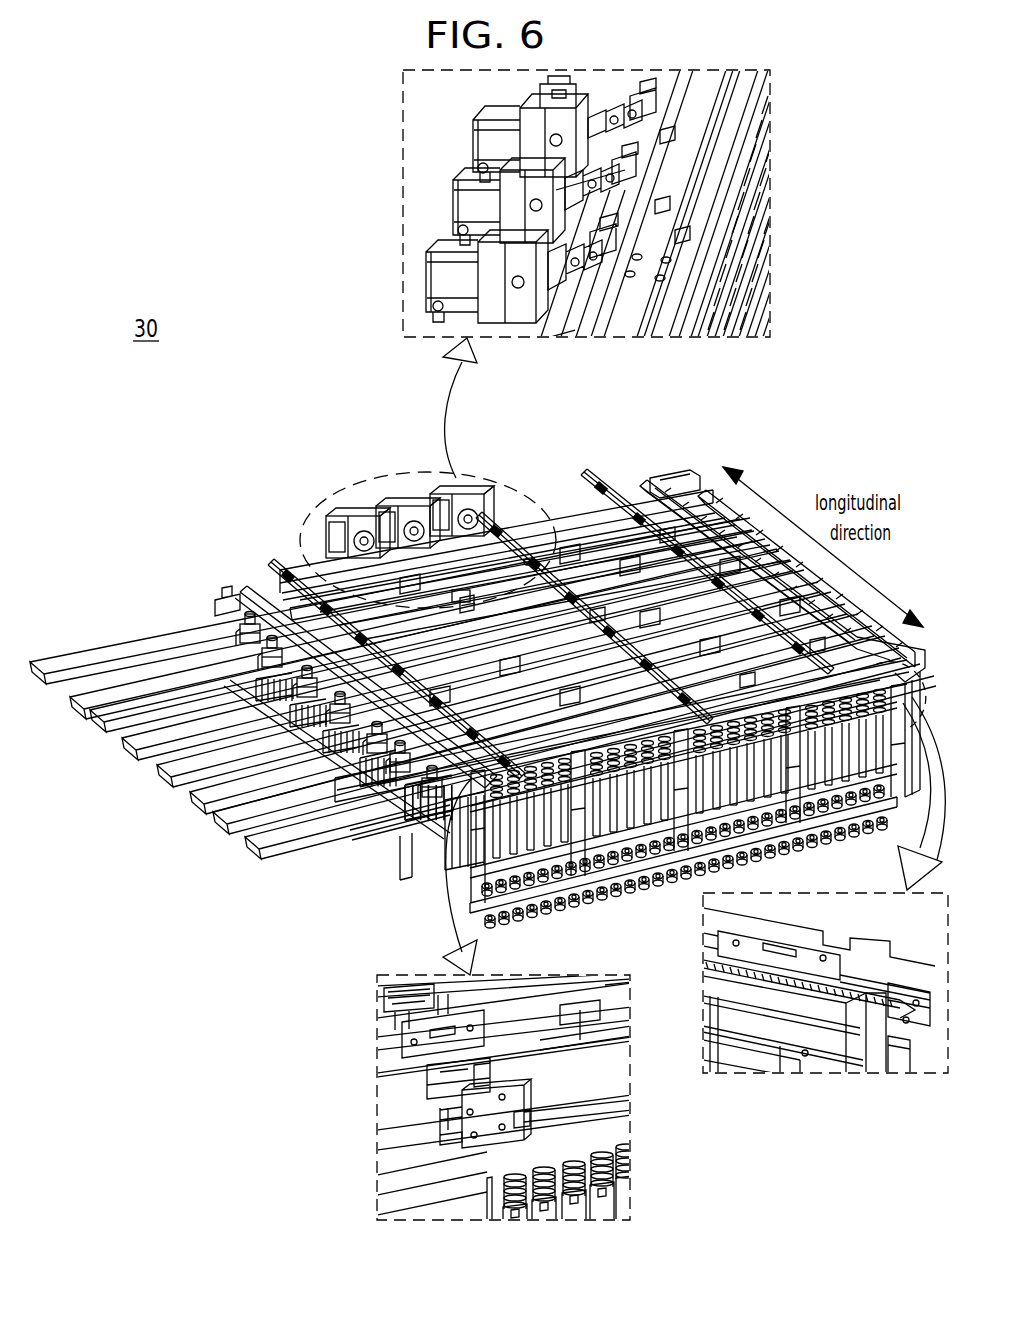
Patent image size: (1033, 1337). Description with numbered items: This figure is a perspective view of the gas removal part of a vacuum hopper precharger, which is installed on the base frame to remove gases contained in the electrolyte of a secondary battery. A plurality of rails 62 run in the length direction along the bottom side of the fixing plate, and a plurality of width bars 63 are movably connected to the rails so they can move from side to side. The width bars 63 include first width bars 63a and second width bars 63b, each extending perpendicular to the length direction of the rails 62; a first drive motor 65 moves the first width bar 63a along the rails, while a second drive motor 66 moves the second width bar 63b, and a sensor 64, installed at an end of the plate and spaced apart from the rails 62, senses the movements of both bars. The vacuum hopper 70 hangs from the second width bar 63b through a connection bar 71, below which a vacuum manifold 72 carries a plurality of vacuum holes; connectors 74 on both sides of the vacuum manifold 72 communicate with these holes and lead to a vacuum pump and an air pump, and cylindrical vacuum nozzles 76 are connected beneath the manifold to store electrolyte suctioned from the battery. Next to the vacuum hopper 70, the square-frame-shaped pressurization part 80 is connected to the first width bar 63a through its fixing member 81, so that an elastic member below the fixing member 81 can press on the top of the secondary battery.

The rails 62 is at (613, 492).
The width bars 63 is at (577, 432).
The first width bars 63a is at (523, 520).
The second width bars 63b is at (562, 525).
The sensor 64 is at (257, 612).
The first drive motor 65 is at (463, 497).
The second drive motor 66 is at (355, 517).
The vacuum hopper 70 is at (614, 838).
The connection bar 71 is at (440, 1077).
The vacuum manifold 72 is at (732, 210).
The connectors 74 is at (488, 1115).
The vacuum nozzle 76 is at (750, 265).
The pressurization part 80 is at (898, 745).
The fixing member 81 is at (860, 1065).